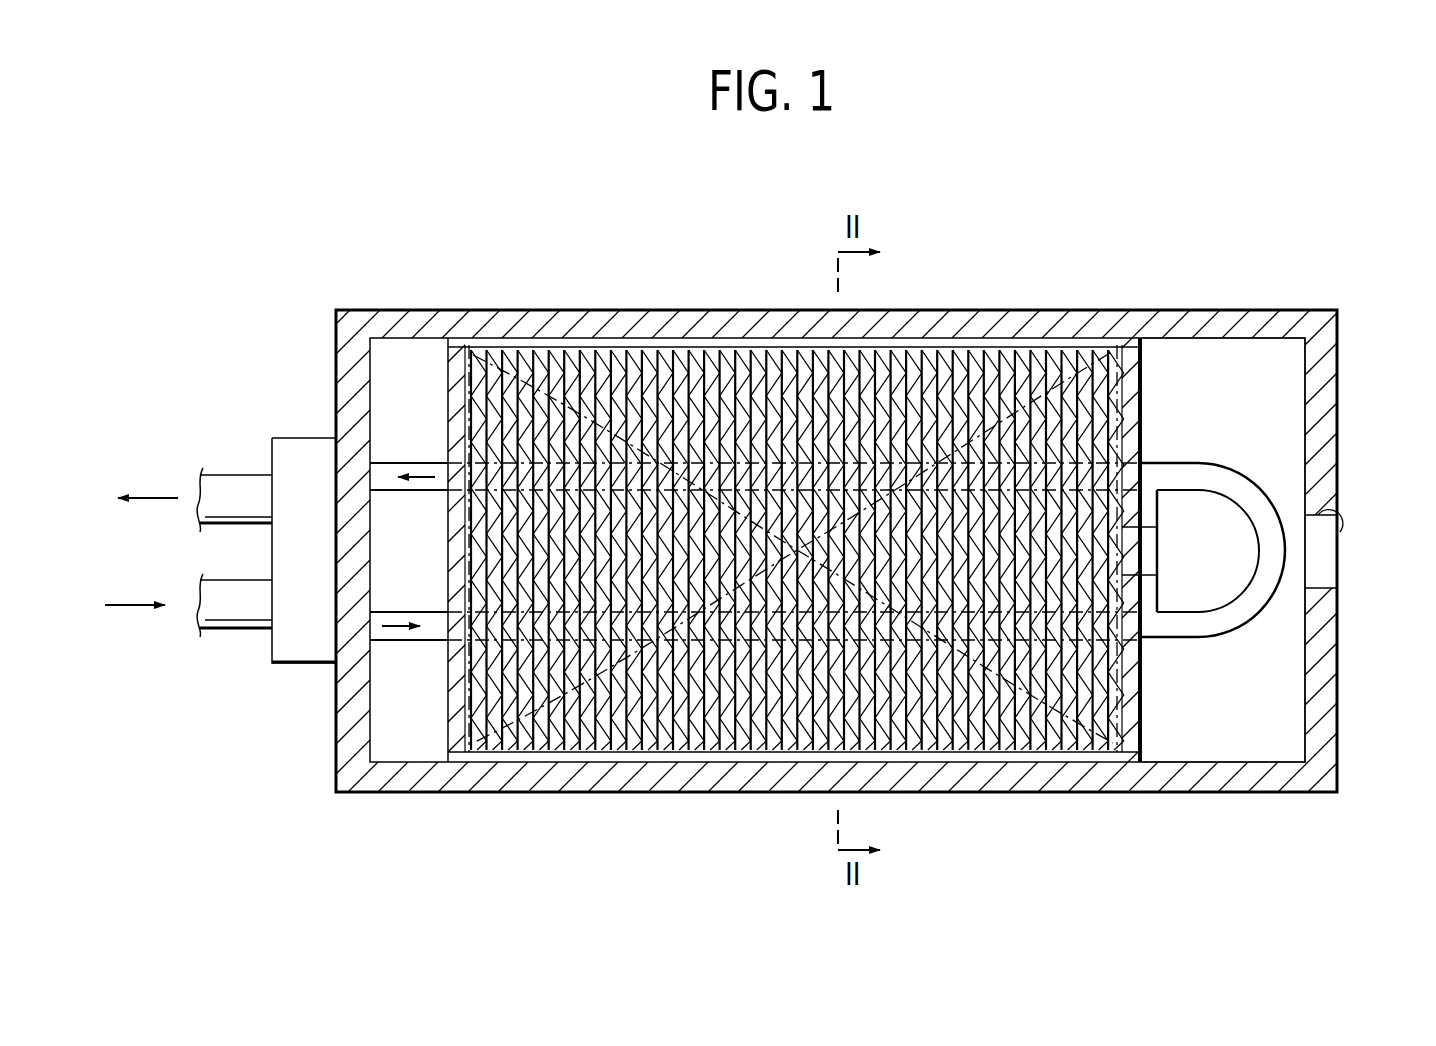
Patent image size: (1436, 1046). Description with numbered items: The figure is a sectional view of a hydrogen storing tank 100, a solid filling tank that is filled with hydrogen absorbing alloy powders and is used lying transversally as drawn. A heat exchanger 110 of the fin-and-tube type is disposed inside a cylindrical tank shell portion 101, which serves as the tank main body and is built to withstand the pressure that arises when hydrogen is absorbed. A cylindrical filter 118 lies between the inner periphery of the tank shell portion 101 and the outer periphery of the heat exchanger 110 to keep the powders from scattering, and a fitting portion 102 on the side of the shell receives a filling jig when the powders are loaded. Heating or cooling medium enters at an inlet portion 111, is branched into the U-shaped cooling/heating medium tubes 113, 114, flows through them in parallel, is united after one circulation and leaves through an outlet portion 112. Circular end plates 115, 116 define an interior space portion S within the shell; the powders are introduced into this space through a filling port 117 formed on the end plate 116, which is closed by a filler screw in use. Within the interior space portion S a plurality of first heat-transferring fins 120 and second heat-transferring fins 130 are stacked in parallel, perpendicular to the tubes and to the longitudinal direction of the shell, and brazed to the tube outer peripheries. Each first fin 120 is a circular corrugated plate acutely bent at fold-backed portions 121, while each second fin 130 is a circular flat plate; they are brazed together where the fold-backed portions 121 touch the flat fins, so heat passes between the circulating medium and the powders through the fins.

The hydrogen storing tank 100 is at (1073, 283).
The tank shell portion 101 is at (1248, 322).
The fitting portion 102 is at (1340, 532).
The heat exchanger 110 is at (1224, 716).
The inlet portion 111 is at (222, 635).
The outlet portion 112 is at (232, 470).
The cooling/heating medium tube 113 is at (407, 463).
The cooling/heating medium tube 114 is at (755, 441).
The end plate 115 is at (455, 765).
The end plate 116 is at (1130, 750).
The filling port 117 is at (1148, 548).
The cylindrical filter 118 is at (975, 763).
The first heat-transferring fin 120 is at (645, 748).
The fold-backed portion 121 is at (685, 748).
The second heat-transferring fin 130 is at (556, 752).
The interior space portion S is at (1020, 355).